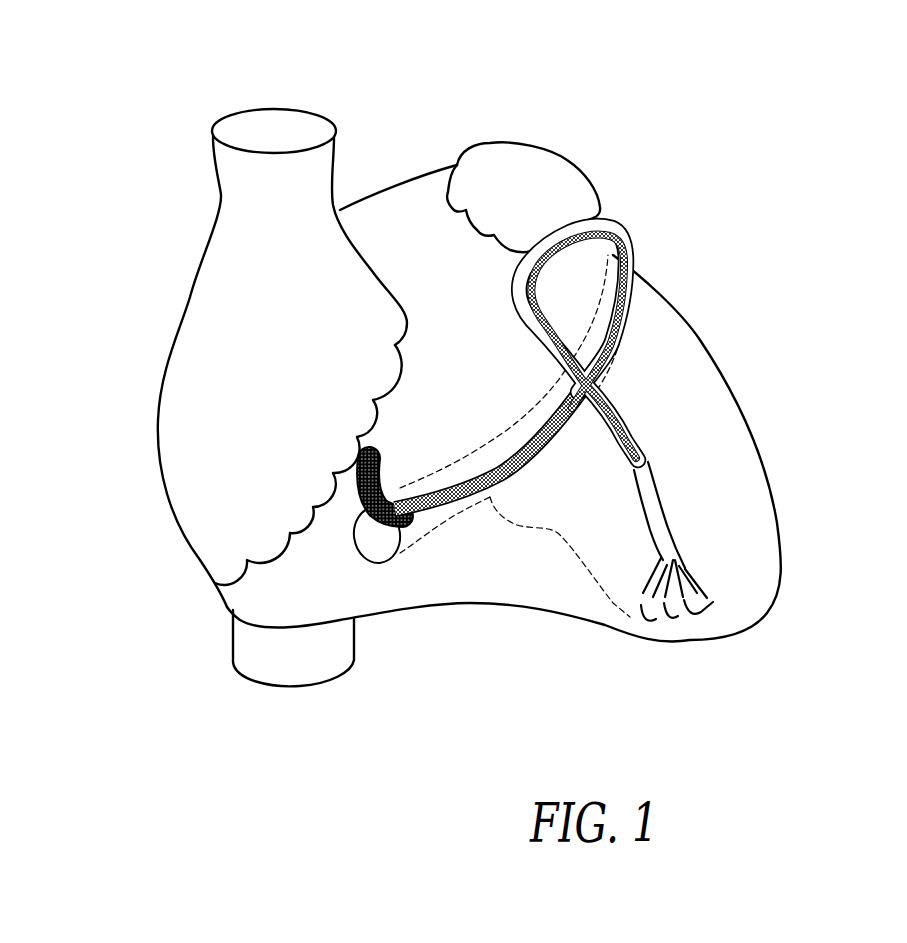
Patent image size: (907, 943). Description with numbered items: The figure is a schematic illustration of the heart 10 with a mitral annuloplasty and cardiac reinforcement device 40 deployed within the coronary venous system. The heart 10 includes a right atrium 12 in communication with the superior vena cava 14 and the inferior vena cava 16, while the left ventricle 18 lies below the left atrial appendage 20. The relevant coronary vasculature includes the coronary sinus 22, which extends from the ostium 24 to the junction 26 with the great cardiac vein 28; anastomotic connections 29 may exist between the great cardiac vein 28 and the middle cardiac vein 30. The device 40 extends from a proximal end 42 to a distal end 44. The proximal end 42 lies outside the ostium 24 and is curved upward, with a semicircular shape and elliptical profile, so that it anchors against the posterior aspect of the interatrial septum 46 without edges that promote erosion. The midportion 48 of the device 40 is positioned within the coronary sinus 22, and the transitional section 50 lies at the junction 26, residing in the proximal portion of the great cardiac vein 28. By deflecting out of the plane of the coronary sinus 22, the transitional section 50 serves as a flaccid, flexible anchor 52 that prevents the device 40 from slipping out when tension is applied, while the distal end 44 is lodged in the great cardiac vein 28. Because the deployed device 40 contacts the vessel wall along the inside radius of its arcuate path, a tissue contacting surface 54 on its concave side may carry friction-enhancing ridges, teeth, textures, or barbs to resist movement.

The heart 10 is at (495, 88).
The right atrium 12 is at (247, 310).
The superior vena cava 14 is at (267, 98).
The inferior vena cava 16 is at (273, 703).
The left ventricle 18 is at (683, 377).
The left atrial appendage 20 is at (517, 185).
The coronary sinus 22 is at (467, 510).
The ostium 24 is at (392, 550).
The junction 26 is at (593, 220).
The great cardiac vein 28 is at (643, 432).
The anastomotic connections 29 is at (713, 604).
The middle cardiac vein 30 is at (560, 563).
The mitral annuloplasty and cardiac reinforcement device 40 is at (558, 508).
The proximal end 42 is at (320, 488).
The distal end 44 is at (638, 432).
The interatrial septum 46 is at (368, 447).
The midportion 48 is at (527, 463).
The transitional section 50 is at (563, 243).
The anchor 52 is at (620, 410).
The tissue contacting surface 54 is at (356, 537).